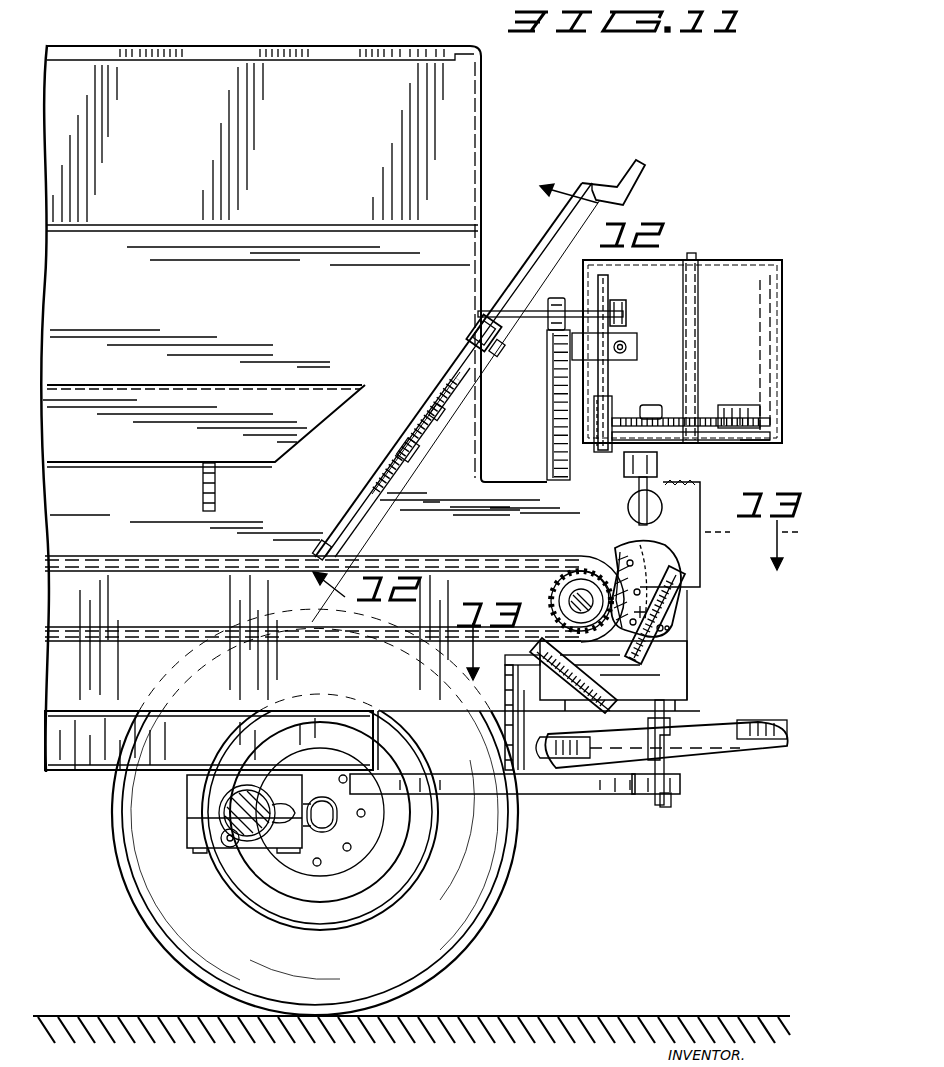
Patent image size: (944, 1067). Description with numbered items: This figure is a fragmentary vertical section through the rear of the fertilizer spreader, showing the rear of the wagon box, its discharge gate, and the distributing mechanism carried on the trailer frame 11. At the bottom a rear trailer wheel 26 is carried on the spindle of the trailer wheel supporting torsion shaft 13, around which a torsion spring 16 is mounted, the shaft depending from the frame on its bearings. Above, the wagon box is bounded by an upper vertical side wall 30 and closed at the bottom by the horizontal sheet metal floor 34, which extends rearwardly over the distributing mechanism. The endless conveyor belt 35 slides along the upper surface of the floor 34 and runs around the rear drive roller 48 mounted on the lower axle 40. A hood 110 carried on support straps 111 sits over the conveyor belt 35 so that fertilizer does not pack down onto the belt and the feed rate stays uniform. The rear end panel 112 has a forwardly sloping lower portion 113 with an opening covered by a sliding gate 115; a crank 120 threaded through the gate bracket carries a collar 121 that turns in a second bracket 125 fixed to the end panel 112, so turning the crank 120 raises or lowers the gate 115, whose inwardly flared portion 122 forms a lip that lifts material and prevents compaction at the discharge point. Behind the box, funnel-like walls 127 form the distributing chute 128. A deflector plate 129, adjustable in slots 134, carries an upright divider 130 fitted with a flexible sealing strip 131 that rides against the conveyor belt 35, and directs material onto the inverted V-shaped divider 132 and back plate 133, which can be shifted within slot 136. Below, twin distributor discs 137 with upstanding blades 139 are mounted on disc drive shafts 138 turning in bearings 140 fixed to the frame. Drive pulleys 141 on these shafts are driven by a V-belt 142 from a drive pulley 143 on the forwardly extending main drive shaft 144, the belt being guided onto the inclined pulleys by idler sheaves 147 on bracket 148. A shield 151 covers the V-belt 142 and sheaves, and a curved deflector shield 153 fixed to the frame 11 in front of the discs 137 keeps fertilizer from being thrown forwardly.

The trailer frame 11 is at (96, 772).
The trailer wheel supporting torsion shaft 13 is at (313, 850).
The torsion spring 16 is at (252, 852).
The rear trailer wheel 26 is at (488, 940).
The upper vertical side wall 30 is at (224, 46).
The floor 34 is at (185, 577).
The endless conveyor belt 35 is at (505, 556).
The lower axle 40 is at (584, 585).
The drive roller 48 is at (557, 603).
The hood 110 is at (352, 383).
The support strap 111 is at (205, 500).
The rear end panel 112 is at (482, 183).
The forwardly sloping lower portion 113 is at (432, 376).
The gate 115 is at (362, 514).
The crank 120 is at (634, 186).
The collar 121 is at (492, 352).
The inwardly flared portion 122 is at (320, 545).
The second bracket 125 is at (470, 318).
The funnel-like wall 127 is at (700, 490).
The distributing chute 128 is at (700, 592).
The deflector plate 129 is at (682, 610).
The upright divider 130 is at (702, 520).
The sealing strip 131 is at (618, 545).
The inverted V-shaped divider 132 is at (690, 678).
The back plate 133 is at (596, 685).
The slot 134 is at (669, 631).
The slot 136 is at (526, 666).
The distributor disc 137 is at (750, 765).
The disc drive shaft 138 is at (669, 805).
The blade 139 is at (568, 725).
The bearing 140 is at (625, 466).
The drive pulley 141 is at (666, 412).
The V-belt 142 is at (606, 392).
The drive pulley 143 is at (612, 300).
The main drive shaft 144 is at (537, 320).
The idler sheave 147 is at (725, 408).
The bracket 148 is at (758, 446).
The shield 151 is at (688, 258).
The curved deflector shield 153 is at (503, 748).